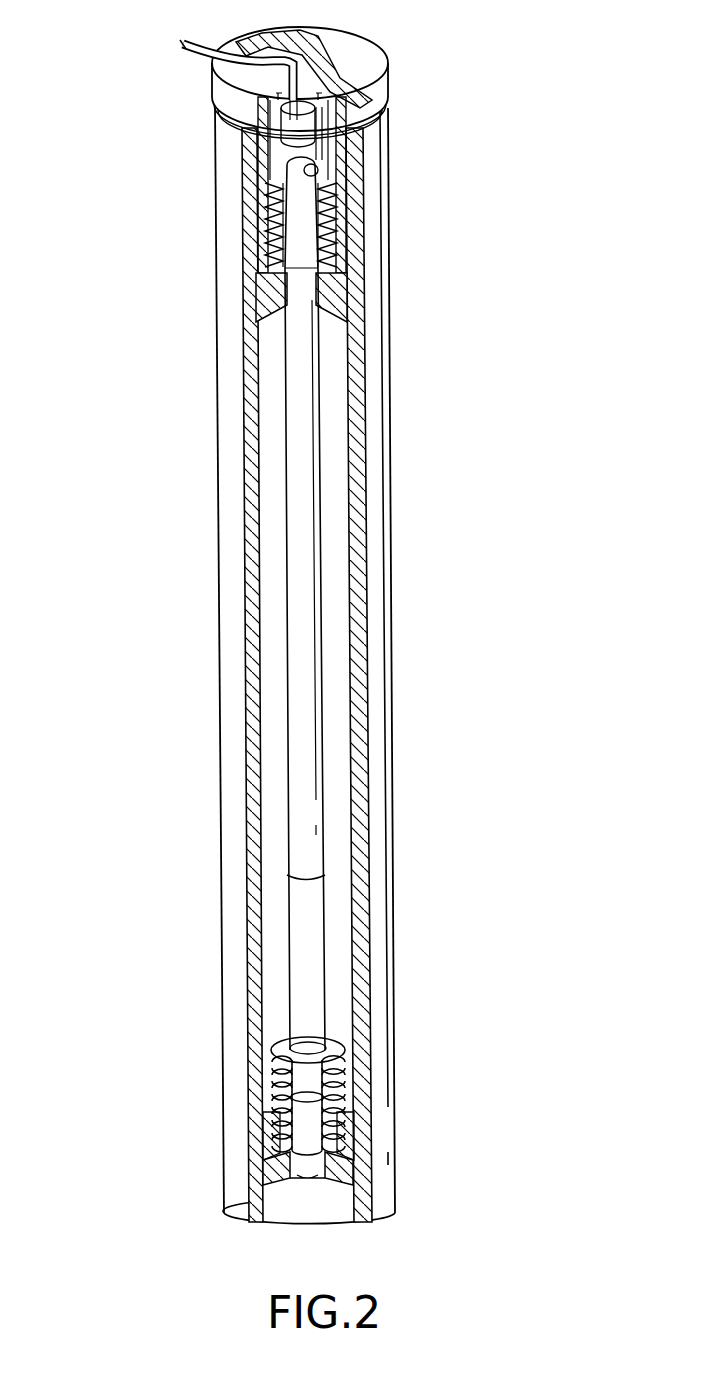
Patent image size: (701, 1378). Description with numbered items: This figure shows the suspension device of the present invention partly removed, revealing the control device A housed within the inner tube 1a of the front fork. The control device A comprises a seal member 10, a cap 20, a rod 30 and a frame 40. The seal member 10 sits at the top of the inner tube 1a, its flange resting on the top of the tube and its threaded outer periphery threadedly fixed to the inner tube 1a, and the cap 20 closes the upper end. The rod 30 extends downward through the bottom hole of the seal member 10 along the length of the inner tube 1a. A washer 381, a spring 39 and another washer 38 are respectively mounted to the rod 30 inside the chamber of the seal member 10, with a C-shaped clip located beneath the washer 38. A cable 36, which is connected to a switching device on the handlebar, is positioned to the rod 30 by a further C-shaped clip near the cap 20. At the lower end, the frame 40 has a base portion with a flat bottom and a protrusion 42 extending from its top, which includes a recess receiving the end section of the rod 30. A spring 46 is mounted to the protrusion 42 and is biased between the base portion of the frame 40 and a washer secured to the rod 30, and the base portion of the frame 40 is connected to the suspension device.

The inner tube 1a is at (374, 588).
The cap 20 is at (347, 63).
The cable 36 is at (195, 53).
The washer 38 is at (258, 175).
The washer 381 is at (258, 240).
The spring 39 is at (343, 227).
The seal member 10 is at (342, 299).
The rod 30 is at (305, 423).
The spring 46 is at (283, 1103).
The protrusion 42 is at (302, 1130).
The frame 40 is at (306, 1200).
The control device A is at (418, 180).